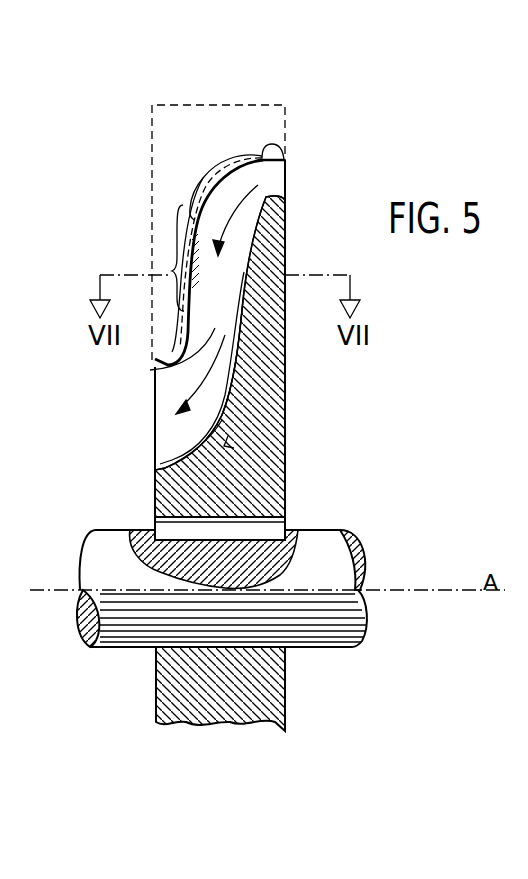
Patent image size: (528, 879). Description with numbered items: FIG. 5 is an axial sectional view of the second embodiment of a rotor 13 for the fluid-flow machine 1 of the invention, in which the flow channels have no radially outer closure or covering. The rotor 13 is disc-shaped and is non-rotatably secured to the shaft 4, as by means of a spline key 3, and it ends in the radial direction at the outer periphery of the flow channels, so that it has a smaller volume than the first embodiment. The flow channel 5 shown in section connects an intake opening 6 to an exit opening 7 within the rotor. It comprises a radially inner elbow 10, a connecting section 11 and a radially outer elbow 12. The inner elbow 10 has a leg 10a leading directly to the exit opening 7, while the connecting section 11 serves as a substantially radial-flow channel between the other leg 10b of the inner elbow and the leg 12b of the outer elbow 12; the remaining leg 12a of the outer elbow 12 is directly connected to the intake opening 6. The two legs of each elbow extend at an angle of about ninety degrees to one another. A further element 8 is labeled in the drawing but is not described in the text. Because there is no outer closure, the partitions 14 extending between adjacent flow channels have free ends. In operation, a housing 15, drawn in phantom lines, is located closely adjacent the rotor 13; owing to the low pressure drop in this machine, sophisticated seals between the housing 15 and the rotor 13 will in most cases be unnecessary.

The fluid-flow machine 1 is at (216, 92).
The spline key 3 is at (258, 530).
The shaft 4 is at (313, 607).
The flow channel 5 is at (150, 370).
The intake opening 6 is at (287, 172).
The exit opening 7 is at (160, 417).
The passage wall boundary 8 is at (250, 355).
The radially inner elbow 10 is at (223, 432).
The leg of inner elbow 10a is at (156, 492).
The leg of inner elbow 10b is at (256, 366).
The connecting section 11 is at (176, 258).
The radially outer elbow 12 is at (226, 158).
The leg of outer elbow 12a is at (264, 157).
The leg of outer elbow 12b is at (190, 207).
The rotor 13 is at (286, 412).
The partition 14 is at (165, 391).
The housing 15 is at (244, 148).